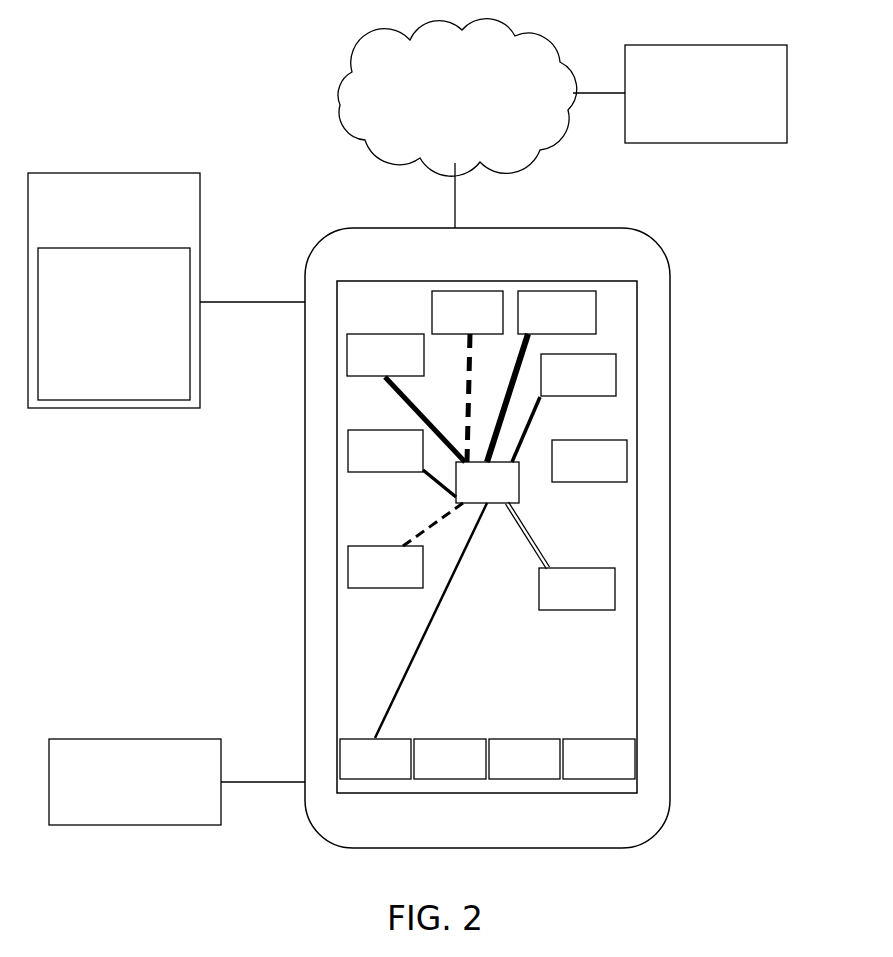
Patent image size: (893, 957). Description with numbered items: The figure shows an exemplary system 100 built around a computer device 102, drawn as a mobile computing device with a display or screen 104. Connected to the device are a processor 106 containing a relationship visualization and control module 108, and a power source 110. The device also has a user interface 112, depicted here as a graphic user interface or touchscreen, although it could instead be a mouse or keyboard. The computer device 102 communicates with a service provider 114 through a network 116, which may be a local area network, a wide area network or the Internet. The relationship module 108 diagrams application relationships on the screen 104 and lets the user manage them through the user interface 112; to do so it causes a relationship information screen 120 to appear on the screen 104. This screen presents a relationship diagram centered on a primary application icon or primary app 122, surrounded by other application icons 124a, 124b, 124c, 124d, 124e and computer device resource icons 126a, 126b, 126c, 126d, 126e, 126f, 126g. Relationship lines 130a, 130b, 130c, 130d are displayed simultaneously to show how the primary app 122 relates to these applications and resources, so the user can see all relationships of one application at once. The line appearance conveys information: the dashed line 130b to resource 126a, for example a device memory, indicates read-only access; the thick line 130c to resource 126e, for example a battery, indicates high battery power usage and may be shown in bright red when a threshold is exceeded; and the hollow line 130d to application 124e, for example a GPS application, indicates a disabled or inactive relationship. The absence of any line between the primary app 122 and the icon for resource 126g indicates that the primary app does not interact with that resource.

The system 100 is at (232, 108).
The computer device 102 is at (680, 398).
The display or screen 104 is at (638, 493).
The processor 106 is at (98, 233).
The relationship visualization and control module 108 is at (98, 390).
The power source 110 is at (120, 798).
The user interface 112 is at (607, 685).
The service provider 114 is at (692, 132).
The network 116 is at (432, 115).
The relationship information screen 120 is at (358, 302).
The primary application icon 122 is at (472, 492).
The application icon 124a is at (396, 769).
The application icon 124b is at (430, 769).
The application icon 124c is at (504, 769).
The application icon 124d is at (579, 769).
The application icon 124e is at (557, 599).
The computer device resource icon 126a is at (406, 577).
The computer device resource icon 126b is at (406, 461).
The computer device resource icon 126c is at (406, 365).
The computer device resource icon 126d is at (488, 322).
The computer device resource icon 126e is at (537, 322).
The computer device resource icon 126f is at (558, 385).
The computer device resource icon 126g is at (610, 471).
The relationship line 130a is at (402, 673).
The dashed relationship line 130b is at (428, 526).
The thick relationship line 130c is at (532, 345).
The hollow relationship line 130d is at (540, 548).